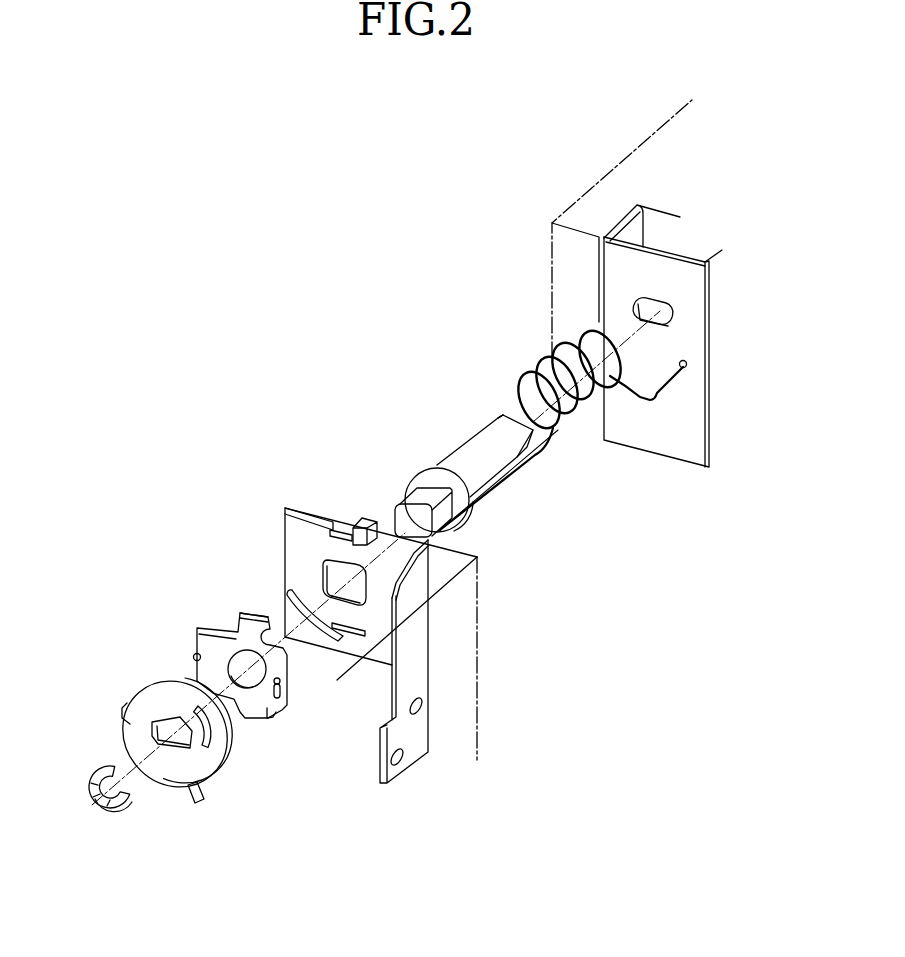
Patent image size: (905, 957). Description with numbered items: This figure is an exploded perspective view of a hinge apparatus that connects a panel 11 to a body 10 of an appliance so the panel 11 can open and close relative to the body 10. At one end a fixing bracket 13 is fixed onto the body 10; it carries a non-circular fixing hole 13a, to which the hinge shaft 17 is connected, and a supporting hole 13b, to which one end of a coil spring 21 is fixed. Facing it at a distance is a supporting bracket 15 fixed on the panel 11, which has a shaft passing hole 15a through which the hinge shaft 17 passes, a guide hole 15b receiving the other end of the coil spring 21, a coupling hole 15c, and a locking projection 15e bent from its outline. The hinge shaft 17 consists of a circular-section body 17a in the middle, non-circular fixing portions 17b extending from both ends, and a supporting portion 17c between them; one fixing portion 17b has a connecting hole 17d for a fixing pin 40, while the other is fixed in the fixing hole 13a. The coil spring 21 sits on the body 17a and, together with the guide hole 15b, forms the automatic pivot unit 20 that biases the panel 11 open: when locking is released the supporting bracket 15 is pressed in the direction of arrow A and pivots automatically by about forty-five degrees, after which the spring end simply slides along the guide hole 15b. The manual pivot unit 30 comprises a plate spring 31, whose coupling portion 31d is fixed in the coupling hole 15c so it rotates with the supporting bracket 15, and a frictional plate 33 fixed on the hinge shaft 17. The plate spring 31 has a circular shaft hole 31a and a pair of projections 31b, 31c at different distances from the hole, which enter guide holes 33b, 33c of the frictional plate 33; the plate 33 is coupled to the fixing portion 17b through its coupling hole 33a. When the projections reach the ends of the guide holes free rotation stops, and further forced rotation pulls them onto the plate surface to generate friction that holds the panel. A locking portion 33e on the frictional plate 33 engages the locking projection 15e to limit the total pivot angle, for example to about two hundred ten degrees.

The body 10 is at (600, 182).
The panel 11 is at (478, 656).
The fixing bracket 13 is at (645, 336).
The fixing hole 13a is at (653, 299).
The supporting hole 13b is at (684, 368).
The supporting bracket 15 is at (340, 615).
The shaft passing hole 15a is at (332, 562).
The guide hole 15b is at (293, 605).
The coupling hole 15c is at (333, 521).
The locking projection 15e is at (362, 517).
The hinge shaft 17 is at (489, 478).
The body 17a is at (463, 452).
The fixing portions 17b is at (533, 457).
The supporting portion 17c is at (470, 497).
The connecting hole 17d is at (411, 490).
The automatic pivot unit 20 is at (579, 404).
The coil spring 21 is at (538, 367).
The manual pivot unit 30 is at (167, 698).
The plate spring 31 is at (205, 656).
The shaft hole 31a is at (230, 654).
The projection 31b is at (196, 658).
The projection 31c is at (276, 711).
The coupling portion 31d is at (253, 613).
The frictional plate 33 is at (152, 742).
The coupling hole 33a is at (158, 744).
The guide hole 33b is at (124, 712).
The guide hole 33c is at (203, 755).
The locking portion 33e is at (197, 803).
The fixing pin 40 is at (122, 805).
The arrow A is at (319, 614).